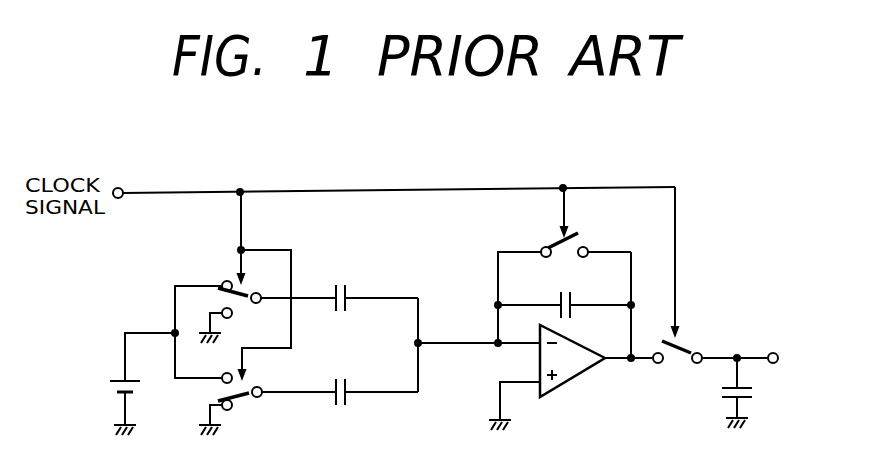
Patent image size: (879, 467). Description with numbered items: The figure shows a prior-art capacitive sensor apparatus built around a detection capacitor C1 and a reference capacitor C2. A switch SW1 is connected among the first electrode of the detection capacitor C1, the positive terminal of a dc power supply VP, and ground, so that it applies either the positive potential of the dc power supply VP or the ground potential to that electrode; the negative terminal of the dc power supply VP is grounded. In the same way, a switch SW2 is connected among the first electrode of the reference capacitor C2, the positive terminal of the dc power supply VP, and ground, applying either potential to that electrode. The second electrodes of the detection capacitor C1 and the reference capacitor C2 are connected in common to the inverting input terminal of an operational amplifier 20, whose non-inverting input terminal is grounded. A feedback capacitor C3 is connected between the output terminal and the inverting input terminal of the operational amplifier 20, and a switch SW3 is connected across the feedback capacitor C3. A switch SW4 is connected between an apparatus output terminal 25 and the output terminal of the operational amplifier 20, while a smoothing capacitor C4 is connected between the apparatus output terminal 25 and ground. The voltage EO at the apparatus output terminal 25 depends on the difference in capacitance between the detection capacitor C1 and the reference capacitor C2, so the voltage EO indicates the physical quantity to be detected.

The switch SW1 is at (239, 301).
The switch SW2 is at (238, 403).
The switch SW3 is at (550, 242).
The switch SW4 is at (684, 348).
The detection capacitor C1 is at (340, 282).
The reference capacitor C2 is at (340, 377).
The feedback capacitor C3 is at (557, 297).
The smoothing capacitor C4 is at (721, 392).
The operational amplifier 20 is at (572, 381).
The apparatus output terminal 25 is at (774, 352).
The dc power supply VP is at (120, 377).
The voltage EO is at (801, 359).